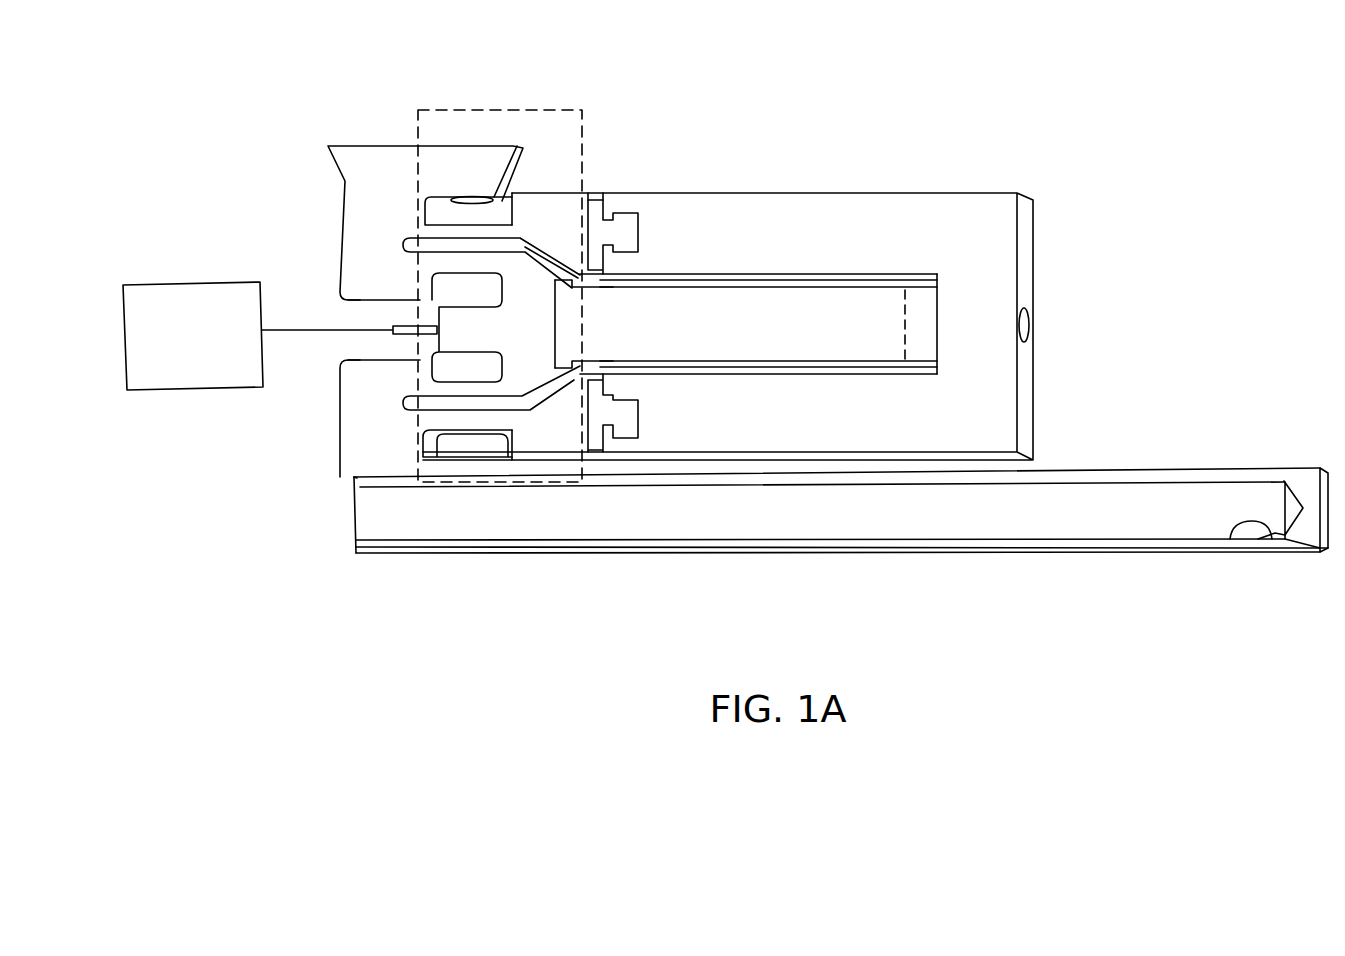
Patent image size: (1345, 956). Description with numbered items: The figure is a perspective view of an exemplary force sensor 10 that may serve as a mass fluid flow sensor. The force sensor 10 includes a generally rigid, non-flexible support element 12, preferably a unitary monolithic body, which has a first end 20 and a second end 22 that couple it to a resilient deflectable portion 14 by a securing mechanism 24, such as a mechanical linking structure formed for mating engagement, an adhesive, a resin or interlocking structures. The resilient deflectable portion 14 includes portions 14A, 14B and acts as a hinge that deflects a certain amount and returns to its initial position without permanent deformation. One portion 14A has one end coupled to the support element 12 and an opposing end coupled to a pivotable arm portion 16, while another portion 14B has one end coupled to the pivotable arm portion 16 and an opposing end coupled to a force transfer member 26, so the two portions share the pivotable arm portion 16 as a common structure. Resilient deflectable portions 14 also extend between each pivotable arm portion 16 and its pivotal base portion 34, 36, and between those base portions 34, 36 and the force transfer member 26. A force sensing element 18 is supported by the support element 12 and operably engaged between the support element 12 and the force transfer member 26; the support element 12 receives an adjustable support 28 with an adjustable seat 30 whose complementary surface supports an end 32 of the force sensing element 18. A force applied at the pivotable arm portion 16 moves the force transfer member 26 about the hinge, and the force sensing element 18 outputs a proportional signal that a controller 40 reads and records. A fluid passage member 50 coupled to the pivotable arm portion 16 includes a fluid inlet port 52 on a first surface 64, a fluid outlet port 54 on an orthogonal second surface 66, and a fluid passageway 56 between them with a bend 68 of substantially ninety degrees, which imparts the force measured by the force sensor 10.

The force sensor 10 is at (977, 148).
The support element 12 is at (995, 198).
The resilient deflectable portion 14 is at (526, 140).
The portion of the resilient deflectable portion 14A is at (470, 230).
The portion of the resilient deflectable portion 14B is at (477, 266).
The pivotable arm portion 16 is at (367, 158).
The force sensing element 18 is at (776, 337).
The first end 20 is at (602, 440).
The second end 22 is at (603, 213).
The securing mechanism 24 is at (627, 227).
The force transfer member 26 is at (433, 321).
The adjustable support 28 is at (1030, 327).
The adjustable seat 30 is at (917, 278).
The end of the force sensing element 32 is at (904, 331).
The pivotal base portion 34 is at (353, 292).
The pivotal base portion 36 is at (372, 361).
The controller 40 is at (193, 336).
The fluid passage member 50 is at (878, 538).
The fluid inlet port 52 is at (377, 512).
The fluid outlet port 54 is at (1267, 543).
The fluid passageway 56 is at (765, 520).
The first surface 64 is at (354, 519).
The second surface 66 is at (1018, 542).
The bend 68 is at (1240, 522).